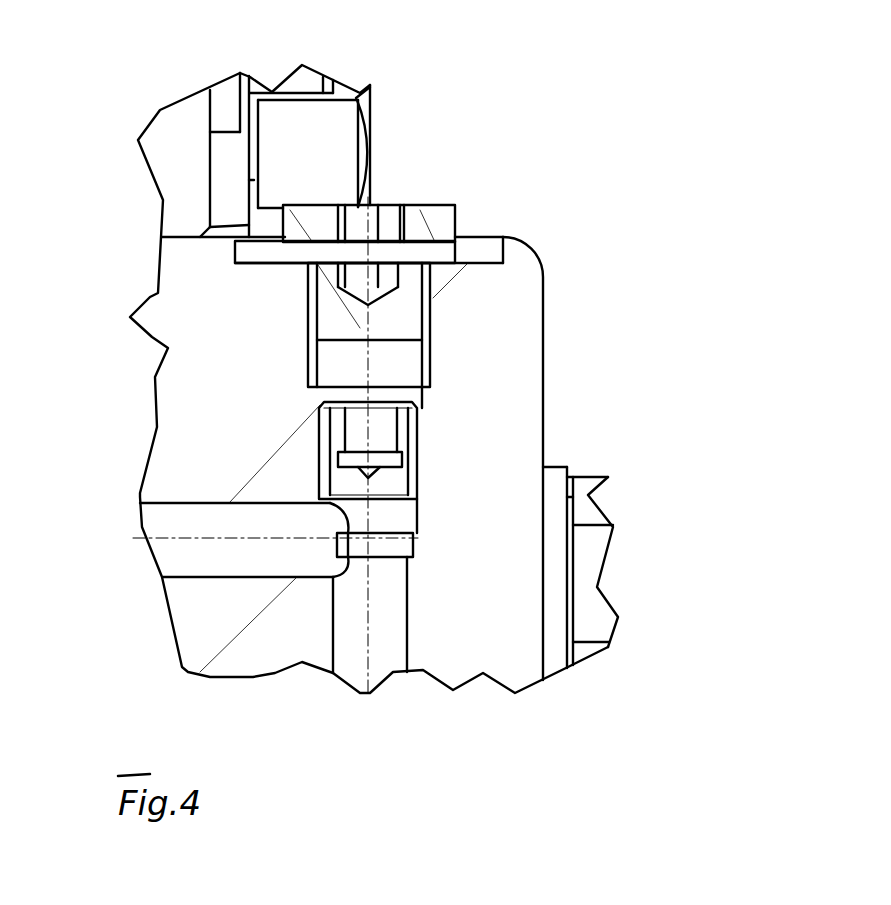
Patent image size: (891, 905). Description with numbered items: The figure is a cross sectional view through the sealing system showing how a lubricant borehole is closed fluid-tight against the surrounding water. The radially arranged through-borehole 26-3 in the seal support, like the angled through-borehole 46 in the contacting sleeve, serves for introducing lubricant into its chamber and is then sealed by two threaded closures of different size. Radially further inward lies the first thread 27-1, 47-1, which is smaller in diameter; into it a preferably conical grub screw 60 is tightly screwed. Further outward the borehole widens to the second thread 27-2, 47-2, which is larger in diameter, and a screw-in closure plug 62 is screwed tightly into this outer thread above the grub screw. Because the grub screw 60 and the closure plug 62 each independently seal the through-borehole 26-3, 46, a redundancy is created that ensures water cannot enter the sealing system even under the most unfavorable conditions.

The closure plug 62 is at (432, 226).
The second thread 27-2 is at (528, 331).
The second thread 47-2 is at (430, 317).
The first thread 27-1 is at (531, 449).
The first thread 47-1 is at (422, 456).
The through-borehole 26-3 is at (574, 586).
The angled through-borehole 46 is at (380, 640).
The grub screw 60 is at (608, 477).